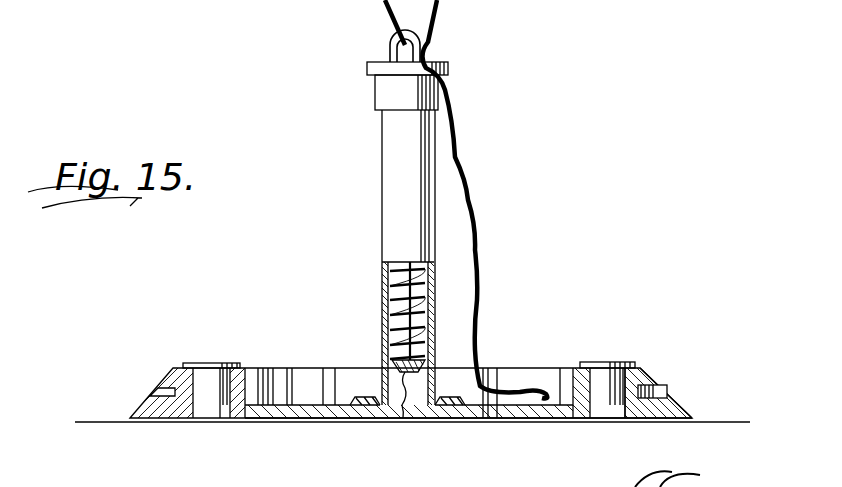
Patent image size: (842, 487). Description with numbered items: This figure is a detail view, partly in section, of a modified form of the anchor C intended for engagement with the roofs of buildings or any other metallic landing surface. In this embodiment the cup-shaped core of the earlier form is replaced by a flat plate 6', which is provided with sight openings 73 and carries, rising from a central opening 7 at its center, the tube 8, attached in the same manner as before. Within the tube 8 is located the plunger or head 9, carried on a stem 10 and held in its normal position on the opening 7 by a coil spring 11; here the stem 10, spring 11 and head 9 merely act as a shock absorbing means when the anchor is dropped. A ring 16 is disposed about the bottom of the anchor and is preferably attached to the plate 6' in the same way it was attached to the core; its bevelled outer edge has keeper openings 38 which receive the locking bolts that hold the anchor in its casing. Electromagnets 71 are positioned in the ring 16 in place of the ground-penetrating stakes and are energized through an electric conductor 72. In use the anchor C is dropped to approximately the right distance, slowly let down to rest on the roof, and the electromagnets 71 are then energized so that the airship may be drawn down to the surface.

The tube 8 is at (382, 205).
The electric conductor 72 is at (470, 223).
The stem 10 is at (435, 300).
The coil spring 11 is at (437, 283).
The plunger or head 9 is at (402, 413).
The anchor C is at (695, 418).
The central opening 7 is at (412, 420).
The plate 6' is at (404, 432).
The sight openings 73 is at (310, 415).
The electromagnets 71 is at (603, 368).
The ring 16 is at (640, 368).
The keeper openings 38 is at (663, 400).